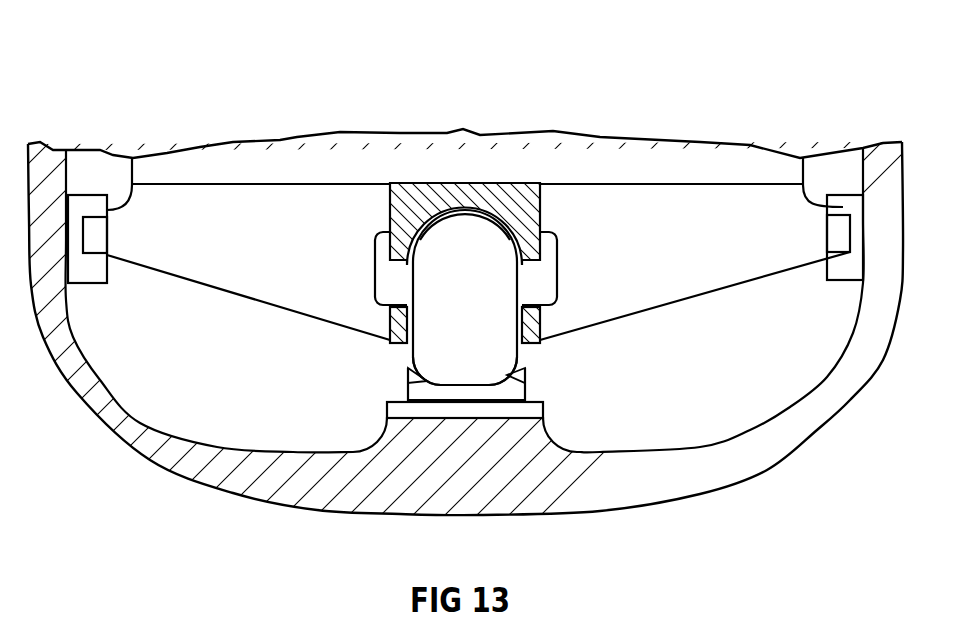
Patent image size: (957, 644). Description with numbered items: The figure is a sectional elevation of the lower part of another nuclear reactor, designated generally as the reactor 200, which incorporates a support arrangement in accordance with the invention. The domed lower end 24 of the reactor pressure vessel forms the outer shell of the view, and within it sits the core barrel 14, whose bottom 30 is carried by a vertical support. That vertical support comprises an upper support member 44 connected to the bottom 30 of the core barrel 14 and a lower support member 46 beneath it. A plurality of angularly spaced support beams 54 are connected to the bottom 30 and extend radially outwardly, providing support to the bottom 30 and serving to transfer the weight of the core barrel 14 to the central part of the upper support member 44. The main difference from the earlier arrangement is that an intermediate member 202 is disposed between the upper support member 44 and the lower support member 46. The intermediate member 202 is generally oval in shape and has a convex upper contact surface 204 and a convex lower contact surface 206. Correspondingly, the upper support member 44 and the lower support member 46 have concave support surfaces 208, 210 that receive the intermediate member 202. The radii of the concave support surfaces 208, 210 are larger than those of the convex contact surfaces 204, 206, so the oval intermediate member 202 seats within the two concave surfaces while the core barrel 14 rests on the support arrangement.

The reactor 200 is at (320, 75).
The core barrel 14 is at (812, 163).
The lower end 24 is at (723, 460).
The bottom 30 is at (230, 184).
The upper support member 44 is at (464, 190).
The lower support member 46 is at (517, 388).
The support beams 54 is at (215, 265).
The intermediate member 202 is at (502, 283).
The upper contact surface 204 is at (520, 217).
The lower contact surface 206 is at (427, 381).
The support surface 208 is at (427, 220).
The support surface 210 is at (505, 376).